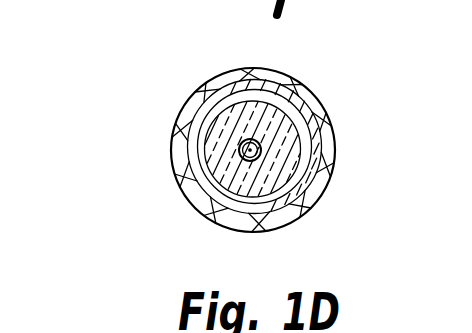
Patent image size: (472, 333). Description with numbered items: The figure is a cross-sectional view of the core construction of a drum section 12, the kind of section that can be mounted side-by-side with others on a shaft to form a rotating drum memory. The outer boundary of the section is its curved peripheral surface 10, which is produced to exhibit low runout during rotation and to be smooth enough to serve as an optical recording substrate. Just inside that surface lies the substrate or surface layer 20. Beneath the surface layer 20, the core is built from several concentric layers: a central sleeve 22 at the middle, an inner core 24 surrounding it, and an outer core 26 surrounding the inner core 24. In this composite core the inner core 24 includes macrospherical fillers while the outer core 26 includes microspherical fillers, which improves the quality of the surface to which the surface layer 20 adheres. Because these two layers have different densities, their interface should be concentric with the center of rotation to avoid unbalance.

The curved peripheral surface 10 is at (200, 86).
The drum section 12 is at (158, 115).
The surface layer 20 is at (320, 179).
The central sleeve 22 is at (259, 140).
The inner core 24 is at (300, 132).
The outer core 26 is at (316, 140).